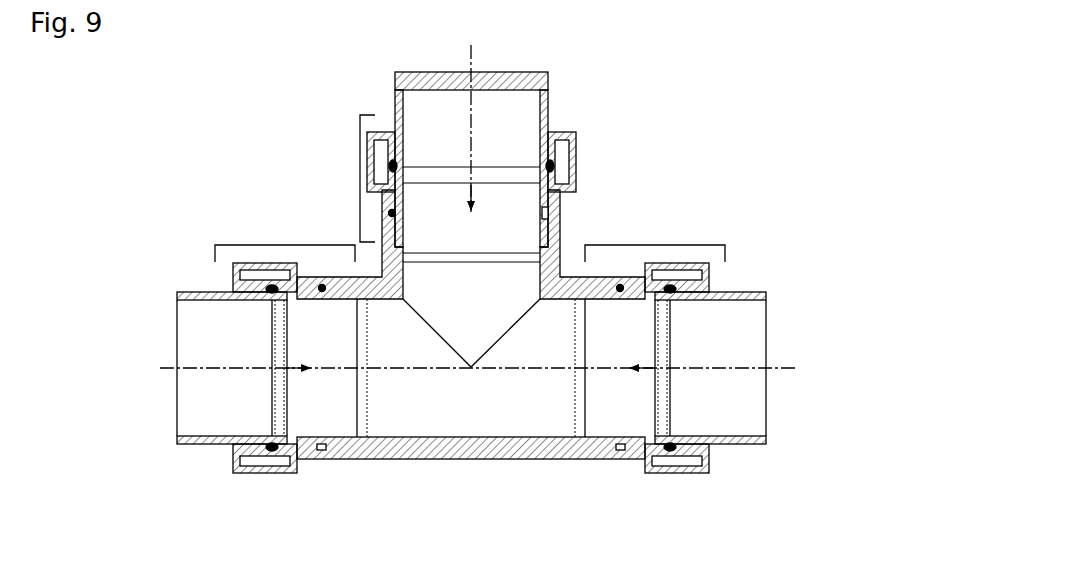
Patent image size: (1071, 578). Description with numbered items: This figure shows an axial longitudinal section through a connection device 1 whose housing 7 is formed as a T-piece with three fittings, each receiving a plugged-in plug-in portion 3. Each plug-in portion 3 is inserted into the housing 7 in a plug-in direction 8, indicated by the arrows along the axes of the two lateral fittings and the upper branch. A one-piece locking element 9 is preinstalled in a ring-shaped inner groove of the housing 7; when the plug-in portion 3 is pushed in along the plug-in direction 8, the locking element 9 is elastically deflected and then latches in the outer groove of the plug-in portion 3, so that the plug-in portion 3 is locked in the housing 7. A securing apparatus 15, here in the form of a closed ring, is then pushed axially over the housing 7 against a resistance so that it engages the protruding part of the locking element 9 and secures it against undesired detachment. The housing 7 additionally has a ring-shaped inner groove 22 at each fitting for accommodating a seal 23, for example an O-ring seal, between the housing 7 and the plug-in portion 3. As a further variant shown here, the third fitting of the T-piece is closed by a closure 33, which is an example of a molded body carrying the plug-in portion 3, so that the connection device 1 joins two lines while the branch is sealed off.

The connection device 1 is at (168, 92).
The plug-in portion 3 is at (360, 180).
The housing 7 is at (389, 277).
The plug-in direction 8 is at (471, 267).
The locking element 9 is at (393, 167).
The securing apparatus 15 is at (573, 155).
The inner groove 22 is at (546, 220).
The seal 23 is at (394, 218).
The closure 33 is at (495, 83).